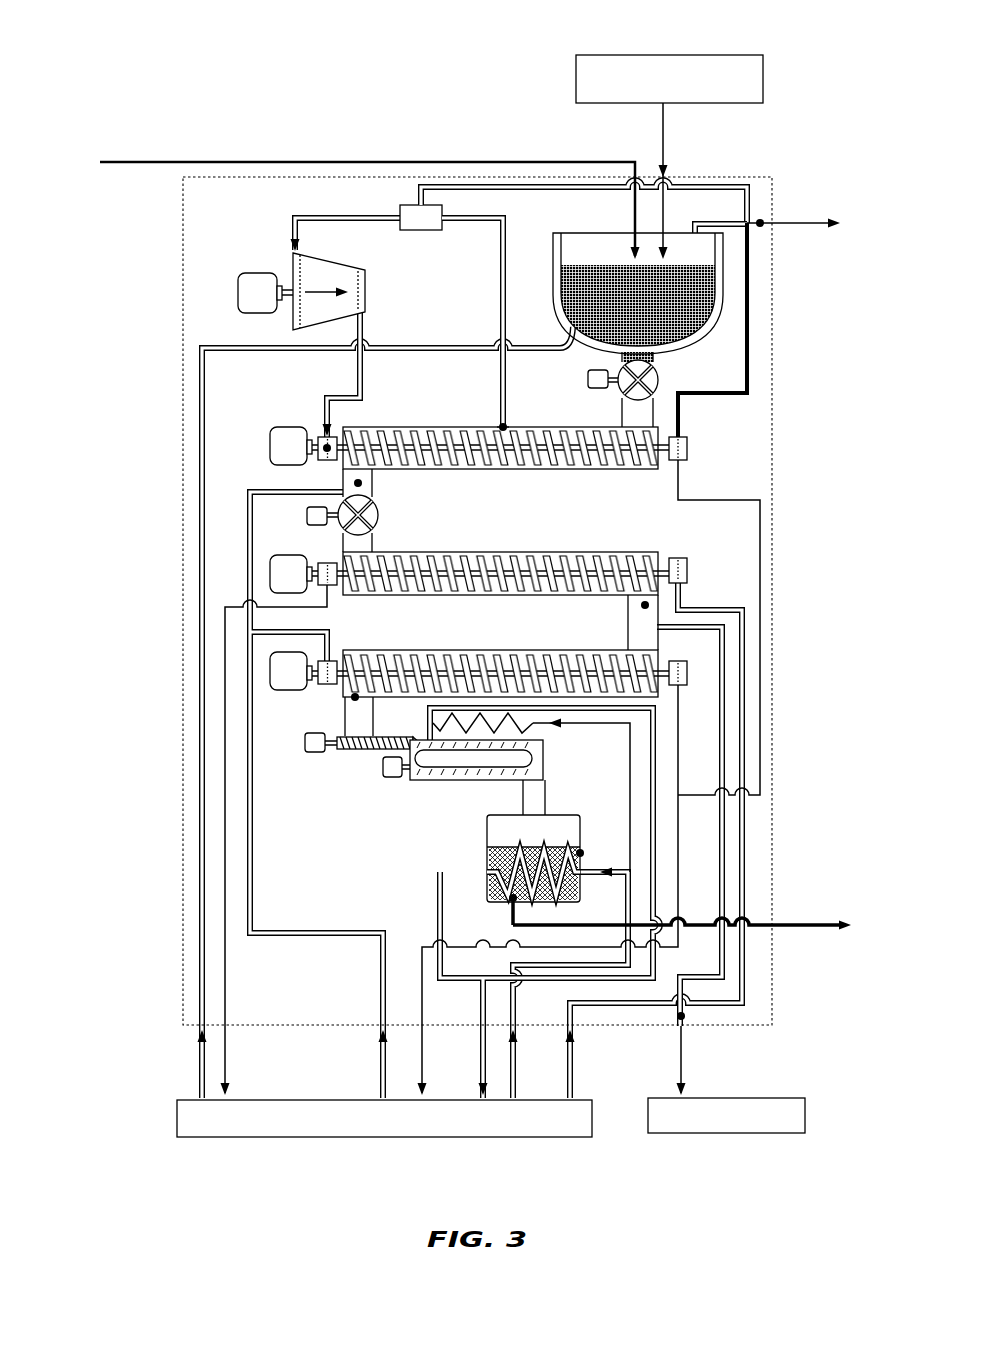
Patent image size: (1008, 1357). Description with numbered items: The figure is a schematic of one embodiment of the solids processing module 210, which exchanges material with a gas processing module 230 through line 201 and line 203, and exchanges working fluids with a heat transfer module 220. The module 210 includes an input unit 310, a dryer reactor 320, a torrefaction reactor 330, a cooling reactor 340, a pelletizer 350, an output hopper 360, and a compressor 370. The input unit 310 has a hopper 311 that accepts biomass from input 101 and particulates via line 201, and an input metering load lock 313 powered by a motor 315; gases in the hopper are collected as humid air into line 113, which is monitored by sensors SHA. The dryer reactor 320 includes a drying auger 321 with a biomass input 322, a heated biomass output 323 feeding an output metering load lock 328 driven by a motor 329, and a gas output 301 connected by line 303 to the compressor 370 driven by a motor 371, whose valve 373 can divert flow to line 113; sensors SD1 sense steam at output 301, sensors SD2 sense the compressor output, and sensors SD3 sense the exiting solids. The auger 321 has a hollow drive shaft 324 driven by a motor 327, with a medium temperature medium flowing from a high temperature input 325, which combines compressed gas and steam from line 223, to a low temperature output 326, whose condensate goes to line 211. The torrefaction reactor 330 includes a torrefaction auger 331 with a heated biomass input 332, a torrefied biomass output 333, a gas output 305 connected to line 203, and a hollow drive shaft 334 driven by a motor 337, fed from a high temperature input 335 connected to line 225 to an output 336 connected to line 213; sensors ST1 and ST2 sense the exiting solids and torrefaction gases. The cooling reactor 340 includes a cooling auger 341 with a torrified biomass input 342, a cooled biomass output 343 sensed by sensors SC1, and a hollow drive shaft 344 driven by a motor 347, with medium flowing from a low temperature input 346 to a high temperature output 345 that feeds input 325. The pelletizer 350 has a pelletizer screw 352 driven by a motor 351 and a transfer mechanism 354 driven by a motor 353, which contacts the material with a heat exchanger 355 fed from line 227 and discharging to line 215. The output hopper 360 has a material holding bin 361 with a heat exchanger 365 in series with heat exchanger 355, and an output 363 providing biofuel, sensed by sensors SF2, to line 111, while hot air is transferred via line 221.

The solids processing module 210 is at (188, 38).
The gas processing module 230 is at (687, 90).
The line 201 is at (660, 148).
The input 101 is at (170, 162).
The humid air line 113 is at (787, 222).
The sensors SHA is at (762, 228).
The hopper 311 is at (543, 252).
The input unit 310 is at (778, 323).
The compressor 370 is at (333, 262).
The valve 373 is at (414, 232).
The motor 371 is at (238, 288).
The line 303 is at (500, 318).
The gas output 301 is at (502, 426).
The sensors SD1 is at (501, 425).
The sensors SD2 is at (326, 445).
The sensors SD3 is at (356, 483).
The drying auger 321 is at (437, 426).
The biomass input 322 is at (622, 426).
The hollow drive shaft 324 is at (470, 465).
The motor 315 is at (588, 378).
The input metering load lock 313 is at (658, 380).
The low temperature output 326 is at (687, 438).
The high temperature input 325 is at (322, 436).
The motor 327 is at (270, 445).
The dryer reactor 320 is at (170, 453).
The heated biomass output 323 is at (371, 470).
The motor 329 is at (306, 512).
The output metering load lock 328 is at (379, 515).
The low temperature heat transfer medium output 336 is at (320, 562).
The heated biomass input 332 is at (380, 552).
The torrefaction auger 331 is at (553, 551).
The torrefied biomass output 333 is at (627, 600).
The hollow drive shaft 334 is at (471, 592).
The high temperature input 335 is at (688, 561).
The motor 337 is at (270, 563).
The torrefaction reactor 330 is at (170, 580).
The sensors ST1 is at (646, 603).
The sensors ST2 is at (690, 1016).
The cooling auger 341 is at (437, 649).
The hollow drive shaft 344 is at (548, 649).
The torrified biomass input 342 is at (613, 649).
The gas output 305 is at (658, 627).
The cooling reactor 340 is at (170, 678).
The motor 347 is at (270, 672).
The high temperature output 345 is at (327, 684).
The low temperature input 346 is at (689, 671).
The cooled biomass output 343 is at (372, 700).
The sensors SC1 is at (354, 694).
The heat exchanger 355 is at (535, 728).
The pelletizer 350 is at (170, 745).
The motor 351 is at (305, 746).
The pelletizer screw 352 is at (357, 750).
The motor 353 is at (385, 776).
The transfer mechanism 354 is at (447, 780).
The material holding bin 361 is at (583, 845).
The output hopper 360 is at (415, 850).
The heat exchanger 365 is at (484, 871).
The output 363 is at (512, 900).
The sensors SF2 is at (584, 853).
The line 111 is at (828, 921).
The line 221 is at (199, 1065).
The line 213 is at (230, 1075).
The line 223 is at (383, 1072).
The line 211 is at (422, 1062).
The line 215 is at (483, 1062).
The line 227 is at (514, 1100).
The line 225 is at (572, 1060).
The line 203 is at (686, 1063).
The heat transfer module 220 is at (263, 1130).